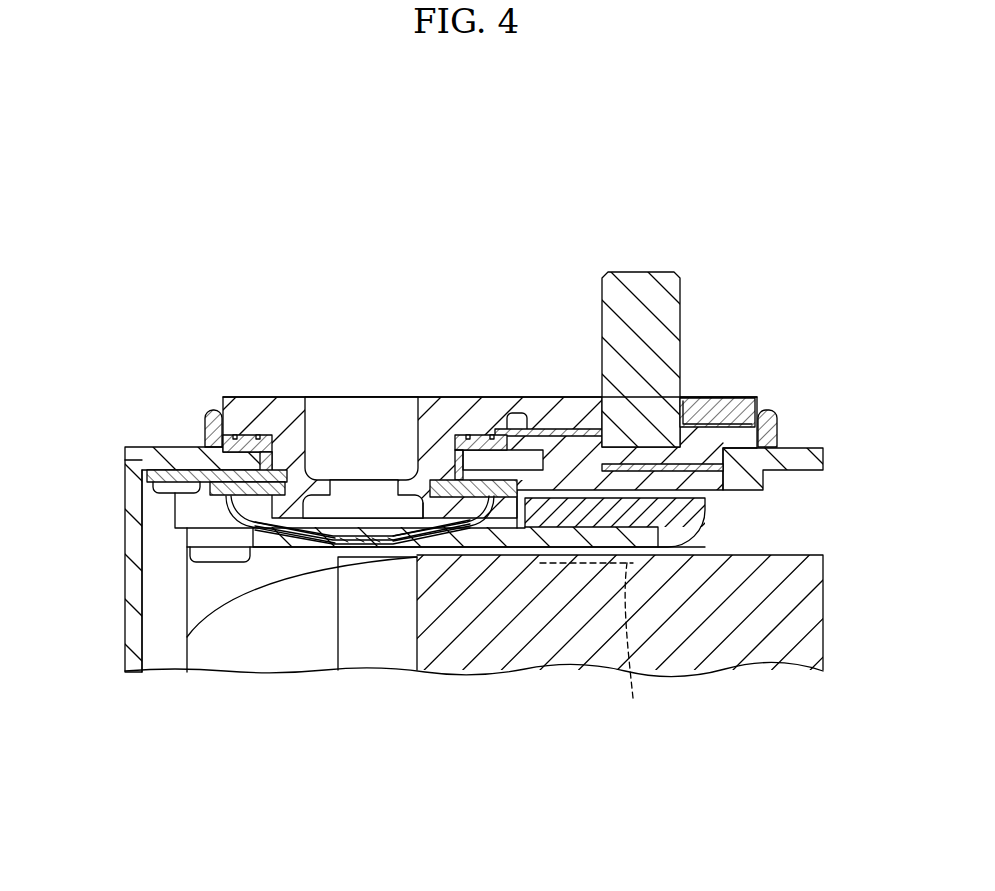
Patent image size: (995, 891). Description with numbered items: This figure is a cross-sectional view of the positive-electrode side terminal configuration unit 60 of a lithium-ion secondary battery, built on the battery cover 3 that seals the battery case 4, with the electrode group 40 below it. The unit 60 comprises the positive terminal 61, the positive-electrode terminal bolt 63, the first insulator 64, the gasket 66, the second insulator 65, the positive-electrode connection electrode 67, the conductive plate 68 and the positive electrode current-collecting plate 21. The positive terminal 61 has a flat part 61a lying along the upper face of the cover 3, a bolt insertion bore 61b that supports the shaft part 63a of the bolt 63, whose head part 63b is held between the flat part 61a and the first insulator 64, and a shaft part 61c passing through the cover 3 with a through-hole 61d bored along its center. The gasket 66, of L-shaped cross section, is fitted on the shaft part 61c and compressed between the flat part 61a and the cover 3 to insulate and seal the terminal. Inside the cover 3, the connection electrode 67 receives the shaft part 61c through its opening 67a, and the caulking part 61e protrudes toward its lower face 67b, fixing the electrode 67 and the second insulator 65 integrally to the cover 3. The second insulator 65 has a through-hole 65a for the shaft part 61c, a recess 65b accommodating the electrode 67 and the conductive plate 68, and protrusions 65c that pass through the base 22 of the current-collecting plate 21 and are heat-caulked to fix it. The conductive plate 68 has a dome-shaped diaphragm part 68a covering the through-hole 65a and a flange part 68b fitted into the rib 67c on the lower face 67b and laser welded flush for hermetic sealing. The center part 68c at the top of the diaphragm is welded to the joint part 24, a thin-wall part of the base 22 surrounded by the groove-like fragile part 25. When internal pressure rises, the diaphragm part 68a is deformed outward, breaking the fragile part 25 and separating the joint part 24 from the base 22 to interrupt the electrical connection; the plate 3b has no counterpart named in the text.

The positive-electrode side terminal configuration unit 60 is at (350, 245).
The battery cover 3 is at (157, 447).
The lid protrusion 3b is at (157, 489).
The battery case 4 is at (140, 600).
The positive electrode current-collecting plate 21 is at (187, 637).
The base 22 is at (185, 539).
The joint part 24 is at (350, 548).
The fragile part 25 is at (332, 549).
The electrode group 40 is at (805, 553).
The positive terminal 61 is at (478, 402).
The flat part 61a is at (530, 407).
The bolt insertion bore 61b is at (585, 410).
The shaft part 61c is at (423, 437).
The through-hole 61d is at (360, 450).
The caulking part 61e is at (292, 518).
The positive-electrode terminal bolt 63 is at (721, 359).
The shaft part 63a is at (663, 326).
The head part 63b is at (693, 440).
The first insulator 64 is at (772, 428).
The second insulator 65 is at (705, 522).
The through-hole 65a is at (458, 452).
The recess 65b is at (515, 525).
The protrusions 65c is at (192, 557).
The gasket 66 is at (246, 435).
The positive-electrode connection electrode 67 is at (328, 641).
The opening 67a is at (290, 482).
The lower face 67b is at (253, 547).
The rib 67c is at (210, 543).
The conductive plate 68 is at (385, 641).
The diaphragm part 68a is at (433, 530).
The flange part 68b is at (492, 524).
The center part 68c is at (395, 545).